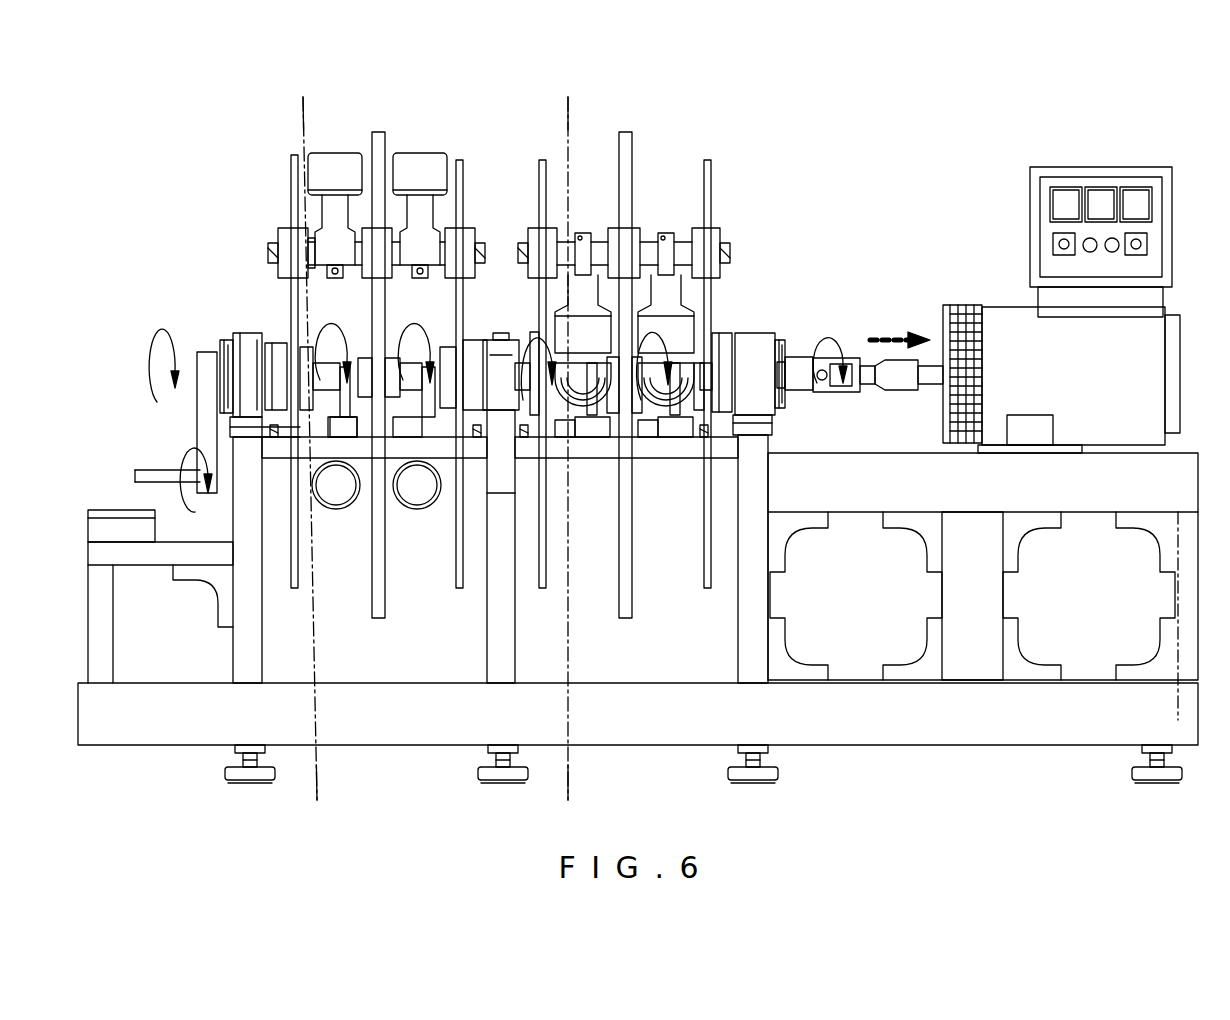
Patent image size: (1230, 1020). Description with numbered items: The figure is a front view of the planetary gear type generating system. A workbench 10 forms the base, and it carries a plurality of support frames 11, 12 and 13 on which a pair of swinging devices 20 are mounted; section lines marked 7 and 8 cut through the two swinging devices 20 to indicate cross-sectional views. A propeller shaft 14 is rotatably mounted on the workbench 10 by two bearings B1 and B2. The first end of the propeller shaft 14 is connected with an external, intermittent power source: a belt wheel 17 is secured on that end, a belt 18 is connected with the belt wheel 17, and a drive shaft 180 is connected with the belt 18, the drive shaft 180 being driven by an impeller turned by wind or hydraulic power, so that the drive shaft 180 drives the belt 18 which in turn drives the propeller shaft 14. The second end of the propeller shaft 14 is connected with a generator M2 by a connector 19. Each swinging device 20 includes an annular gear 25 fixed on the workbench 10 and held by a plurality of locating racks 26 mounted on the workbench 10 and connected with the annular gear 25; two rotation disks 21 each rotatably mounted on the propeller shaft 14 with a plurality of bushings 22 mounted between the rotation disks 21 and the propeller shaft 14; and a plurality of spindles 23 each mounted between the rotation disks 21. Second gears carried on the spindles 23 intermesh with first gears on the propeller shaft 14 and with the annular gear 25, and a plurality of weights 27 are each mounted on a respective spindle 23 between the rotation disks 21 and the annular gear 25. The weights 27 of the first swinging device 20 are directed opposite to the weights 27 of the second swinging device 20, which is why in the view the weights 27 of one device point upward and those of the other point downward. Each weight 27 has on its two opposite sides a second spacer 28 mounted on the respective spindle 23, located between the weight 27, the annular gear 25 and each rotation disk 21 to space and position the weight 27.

The section line 7- 7 is at (292, 115).
The section line 8- 8 is at (557, 115).
The workbench 10 is at (868, 725).
The support frame 11 is at (255, 660).
The support frame 12 is at (505, 657).
The support frame 13 is at (738, 657).
The propeller shaft 14 is at (358, 352).
The belt wheel 17 is at (199, 352).
The belt 18 is at (203, 422).
The drive shaft 180 is at (158, 482).
The connector 19 is at (851, 389).
The swinging device 20 is at (333, 76).
The rotation disk 21 is at (290, 170).
The bushing 22 is at (277, 345).
The spindle 23 is at (258, 250).
The annular gear 25 is at (377, 131).
The locating rack 26 is at (355, 420).
The weight 27 is at (333, 165).
The second spacer 28 is at (317, 247).
The bearing B1 is at (243, 338).
The bearing B2 is at (762, 343).
The generator M2 is at (997, 313).